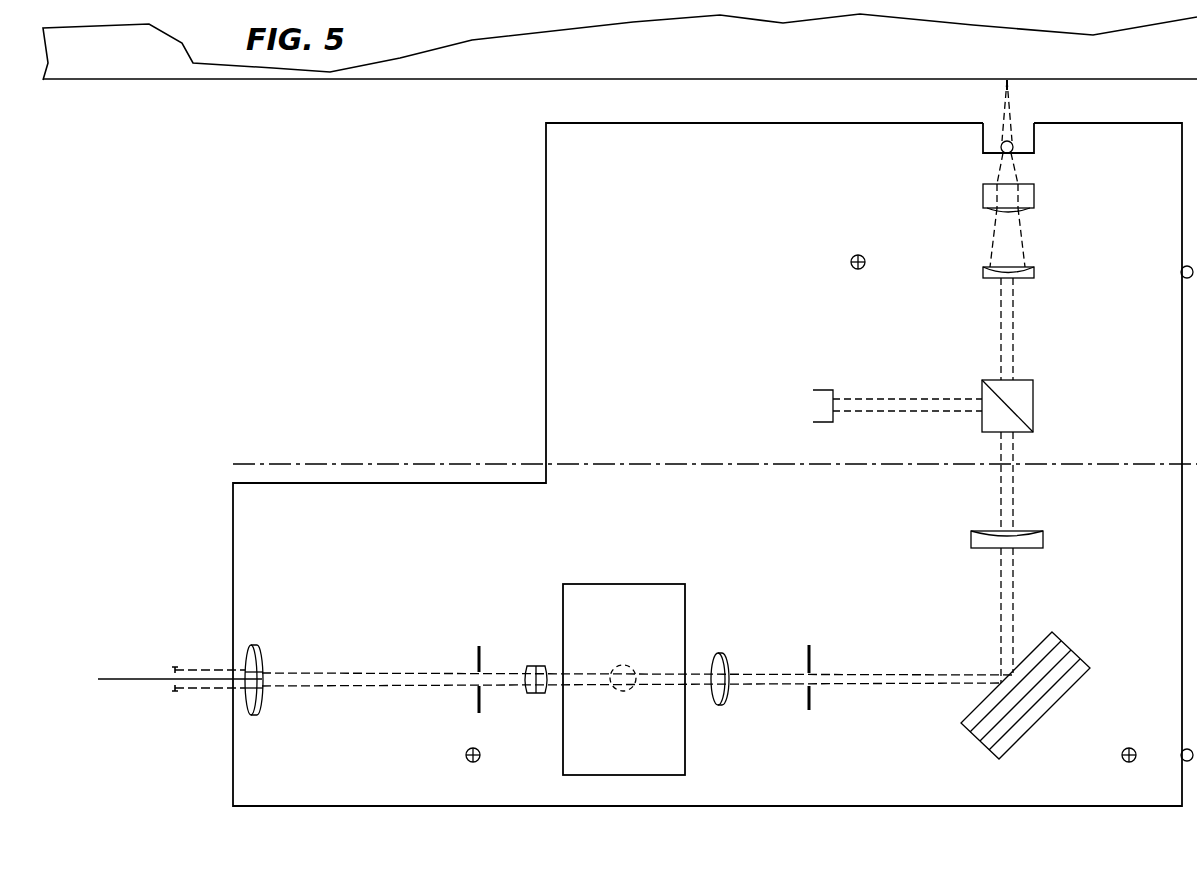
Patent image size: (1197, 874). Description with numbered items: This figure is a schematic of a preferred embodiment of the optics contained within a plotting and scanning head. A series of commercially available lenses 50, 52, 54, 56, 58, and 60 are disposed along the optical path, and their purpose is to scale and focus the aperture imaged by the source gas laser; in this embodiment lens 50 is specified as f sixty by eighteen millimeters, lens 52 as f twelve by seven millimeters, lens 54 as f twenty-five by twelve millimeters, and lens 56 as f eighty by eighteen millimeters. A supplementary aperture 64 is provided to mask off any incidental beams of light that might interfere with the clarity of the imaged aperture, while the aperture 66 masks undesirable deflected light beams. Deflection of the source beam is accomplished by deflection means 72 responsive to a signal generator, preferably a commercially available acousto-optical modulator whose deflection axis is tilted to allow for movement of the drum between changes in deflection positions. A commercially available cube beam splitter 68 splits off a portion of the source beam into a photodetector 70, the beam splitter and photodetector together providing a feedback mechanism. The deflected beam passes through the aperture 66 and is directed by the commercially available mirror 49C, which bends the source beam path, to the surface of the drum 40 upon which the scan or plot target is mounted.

The drum 40 is at (890, 57).
The mirror 49C is at (1070, 648).
The lens 50 is at (263, 653).
The lens 52 is at (538, 693).
The lens 54 is at (721, 705).
The lens 56 is at (1043, 538).
The lens 58 is at (990, 266).
The lens 60 is at (1034, 197).
The supplementary aperture 64 is at (478, 704).
The aperture 66 is at (808, 706).
The cube beam splitter 68 is at (1034, 413).
The photodetector 70 is at (823, 390).
The deflection means 72 is at (601, 584).